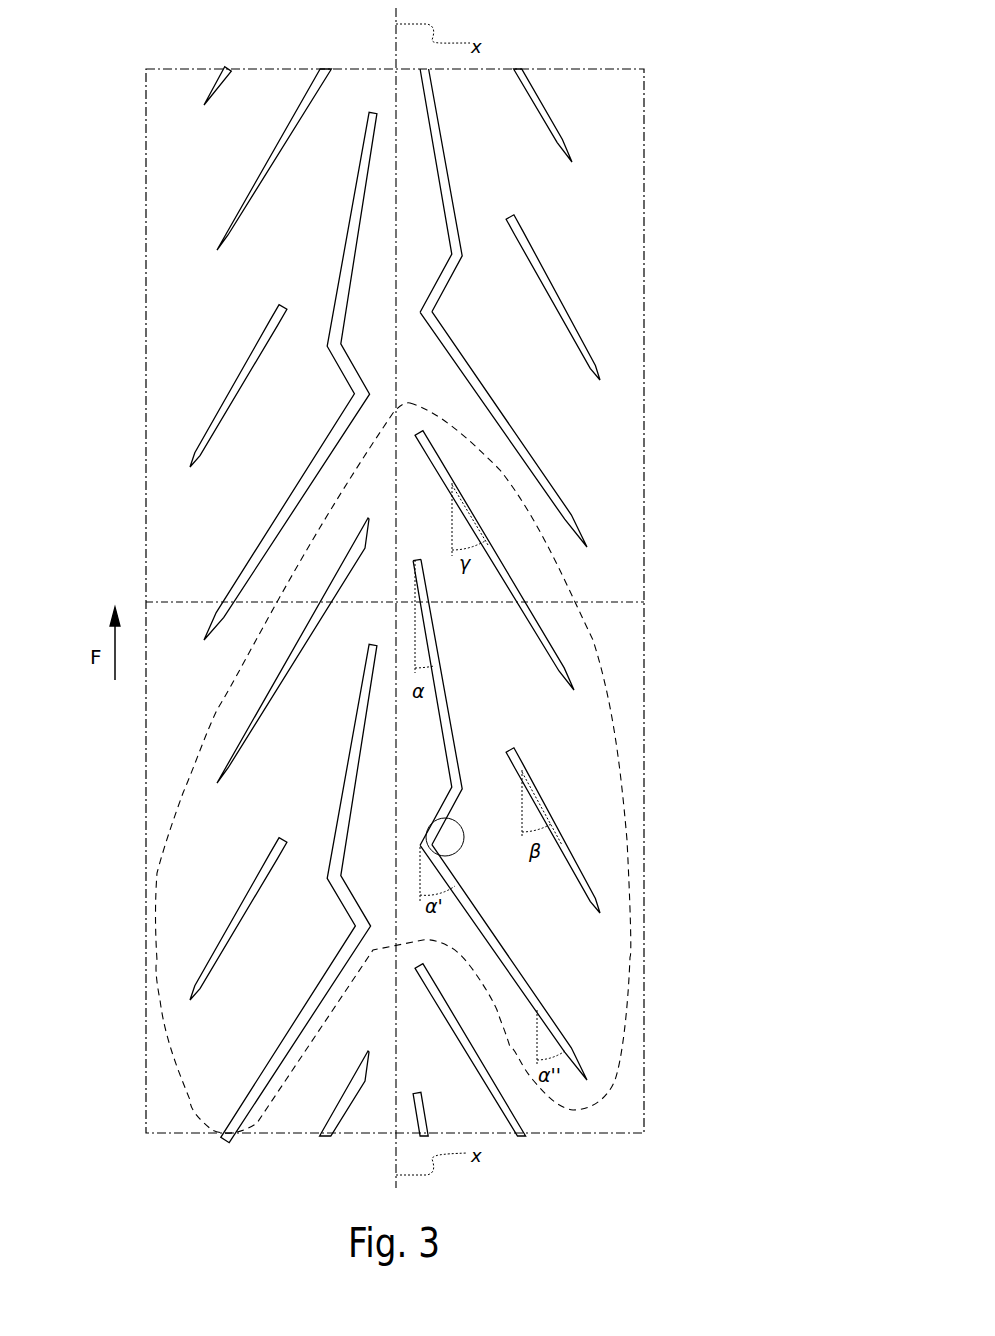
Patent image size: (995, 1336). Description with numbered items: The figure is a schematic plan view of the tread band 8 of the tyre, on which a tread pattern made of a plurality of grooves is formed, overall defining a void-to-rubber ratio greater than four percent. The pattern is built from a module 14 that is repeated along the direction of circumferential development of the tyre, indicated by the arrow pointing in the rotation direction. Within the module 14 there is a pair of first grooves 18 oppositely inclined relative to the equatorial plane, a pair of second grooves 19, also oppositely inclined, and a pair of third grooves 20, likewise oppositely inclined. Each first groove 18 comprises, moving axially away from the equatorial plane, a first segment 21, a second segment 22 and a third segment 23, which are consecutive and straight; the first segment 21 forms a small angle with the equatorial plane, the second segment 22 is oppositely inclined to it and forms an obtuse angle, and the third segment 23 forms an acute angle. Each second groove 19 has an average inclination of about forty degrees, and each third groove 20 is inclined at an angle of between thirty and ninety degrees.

The tread band 8 is at (671, 114).
The module 14 is at (622, 745).
The first groove 18 is at (243, 573).
The second groove 19 is at (223, 397).
The third groove 20 is at (240, 733).
The first segment 21 is at (452, 713).
The second segment 22 is at (462, 826).
The third segment 23 is at (468, 897).